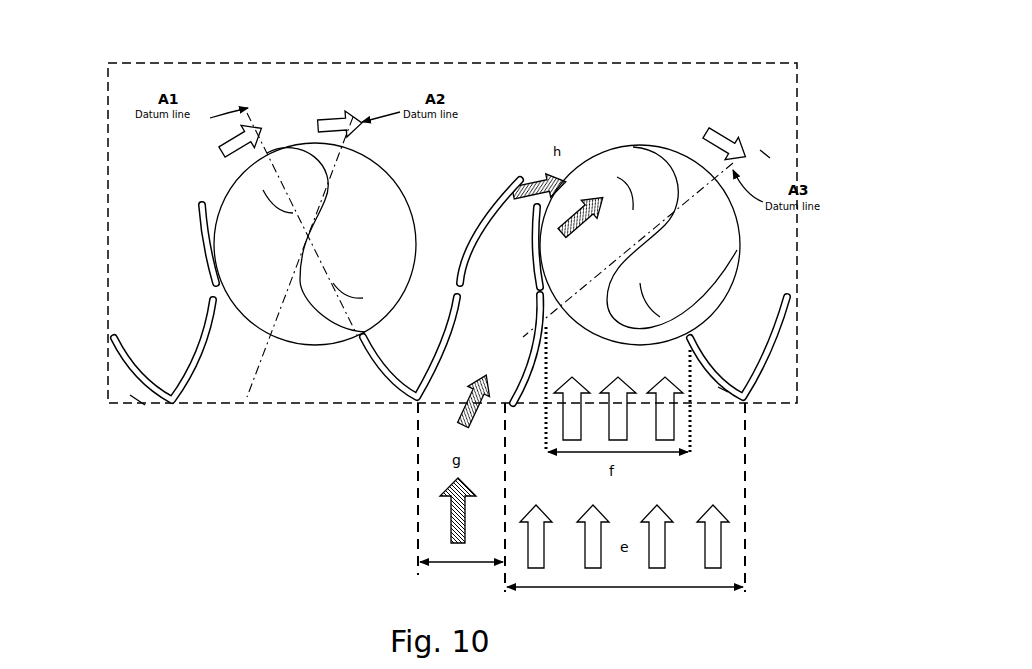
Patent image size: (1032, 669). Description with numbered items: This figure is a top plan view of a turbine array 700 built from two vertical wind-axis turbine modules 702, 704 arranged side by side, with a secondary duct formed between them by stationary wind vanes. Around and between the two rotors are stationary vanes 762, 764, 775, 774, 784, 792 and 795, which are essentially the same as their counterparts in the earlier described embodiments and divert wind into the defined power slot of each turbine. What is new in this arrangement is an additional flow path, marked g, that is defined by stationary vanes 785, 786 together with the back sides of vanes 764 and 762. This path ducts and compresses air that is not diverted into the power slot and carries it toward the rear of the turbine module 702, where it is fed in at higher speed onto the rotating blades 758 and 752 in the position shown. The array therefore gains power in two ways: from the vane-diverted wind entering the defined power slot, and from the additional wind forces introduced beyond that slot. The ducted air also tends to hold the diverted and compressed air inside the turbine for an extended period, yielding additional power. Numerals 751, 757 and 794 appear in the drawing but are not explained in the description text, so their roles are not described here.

The turbine array 700 is at (663, 63).
The turbine module 702 is at (767, 145).
The turbine module 704 is at (299, 132).
The second rotating body 751 is at (702, 245).
The rotating blade 752 is at (665, 160).
The blade 757 is at (650, 303).
The rotating blade 758 is at (632, 193).
The stationary vane 762 is at (526, 260).
The stationary vane 764 is at (530, 408).
The stationary vane 774 is at (760, 374).
The stationary vane 775 is at (720, 387).
The stationary vane 784 is at (390, 386).
The stationary vane 785 is at (442, 370).
The stationary vane 786 is at (504, 186).
The stationary vane 792 is at (200, 264).
The inlet 794 is at (138, 395).
The stationary vane 795 is at (186, 372).